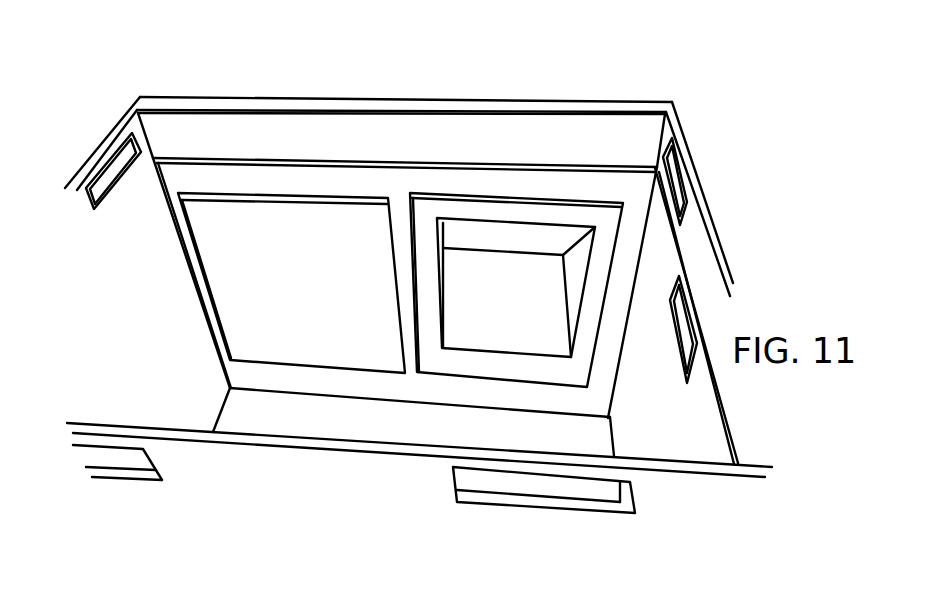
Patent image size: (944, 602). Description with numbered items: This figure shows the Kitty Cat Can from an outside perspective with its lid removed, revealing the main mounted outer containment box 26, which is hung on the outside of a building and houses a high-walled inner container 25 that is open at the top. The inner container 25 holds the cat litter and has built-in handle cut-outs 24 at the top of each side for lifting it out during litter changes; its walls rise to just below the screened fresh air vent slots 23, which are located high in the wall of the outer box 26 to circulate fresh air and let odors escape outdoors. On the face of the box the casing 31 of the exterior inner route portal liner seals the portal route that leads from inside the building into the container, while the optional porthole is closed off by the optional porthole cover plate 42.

The screened fresh air vent slots 23 is at (677, 165).
The handle cut-outs 24 is at (670, 302).
The high-walled inner container 25 is at (332, 158).
The main mounted outer containment box 26 is at (560, 122).
The casing 31 is at (478, 195).
The optional porthole cover plate 42 is at (287, 195).